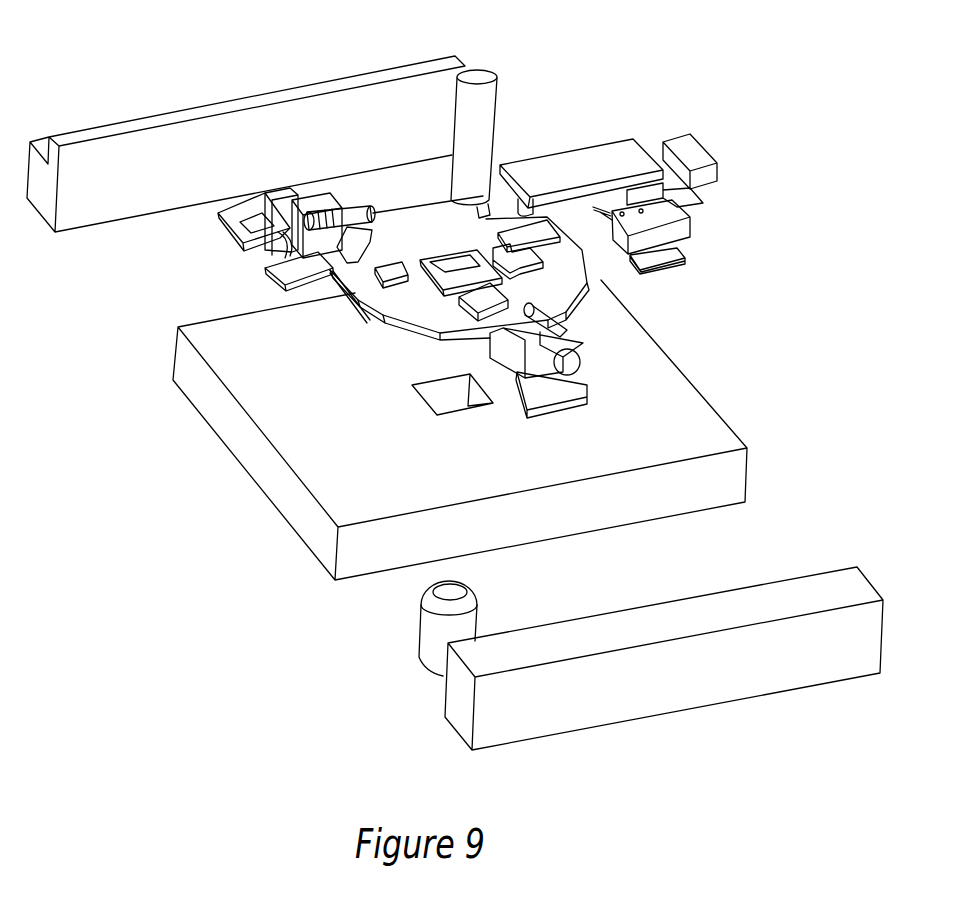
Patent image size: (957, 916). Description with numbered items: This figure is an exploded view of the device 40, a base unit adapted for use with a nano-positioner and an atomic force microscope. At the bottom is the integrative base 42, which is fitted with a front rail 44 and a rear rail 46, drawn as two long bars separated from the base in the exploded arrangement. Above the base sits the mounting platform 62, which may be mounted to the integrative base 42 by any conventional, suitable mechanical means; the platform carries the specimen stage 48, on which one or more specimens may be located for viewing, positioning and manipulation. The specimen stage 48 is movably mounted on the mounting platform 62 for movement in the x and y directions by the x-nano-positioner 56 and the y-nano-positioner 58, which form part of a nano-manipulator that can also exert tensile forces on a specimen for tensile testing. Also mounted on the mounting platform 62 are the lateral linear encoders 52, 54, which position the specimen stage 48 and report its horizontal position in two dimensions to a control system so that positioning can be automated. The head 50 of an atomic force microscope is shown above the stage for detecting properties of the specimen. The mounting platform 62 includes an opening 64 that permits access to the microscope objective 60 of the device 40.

The device 40 is at (166, 558).
The integrative base 42 is at (681, 444).
The front rail 44 is at (752, 682).
The rear rail 46 is at (350, 103).
The specimen stage 48 is at (587, 160).
The head 50 is at (483, 108).
The lateral linear encoder 52 is at (698, 157).
The lateral linear encoder 54 is at (672, 235).
The x-nano-positioner 56 is at (263, 268).
The y-nano-positioner 58 is at (585, 342).
The microscope objective 60 is at (437, 401).
The mounting platform 62 is at (383, 310).
The opening 64 is at (447, 258).